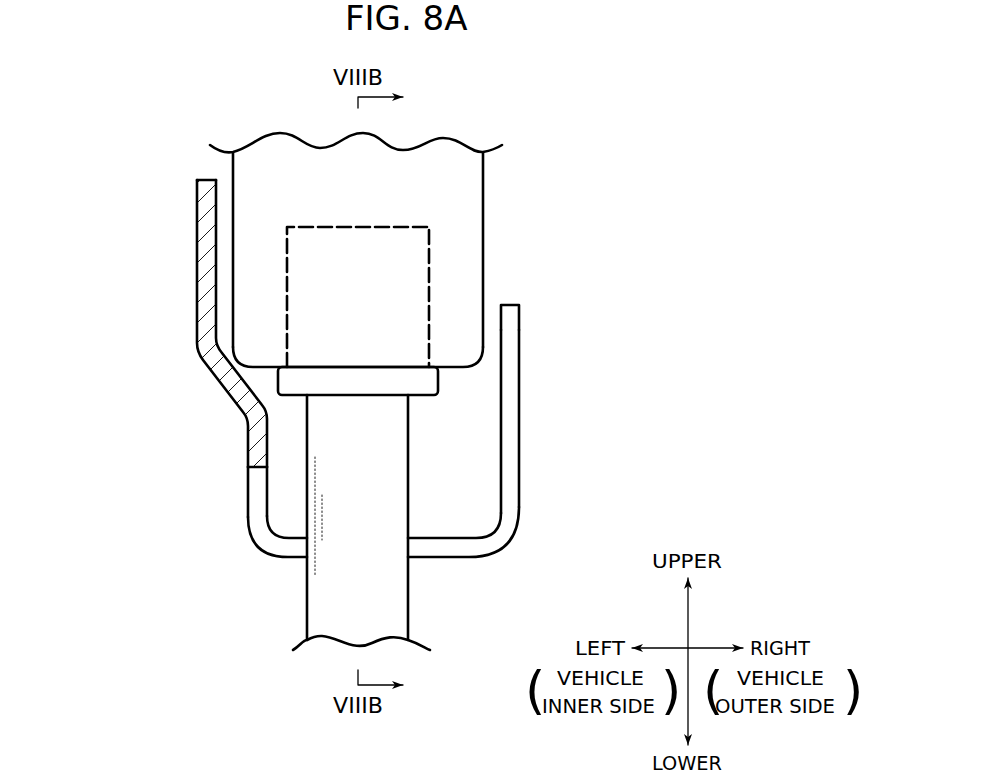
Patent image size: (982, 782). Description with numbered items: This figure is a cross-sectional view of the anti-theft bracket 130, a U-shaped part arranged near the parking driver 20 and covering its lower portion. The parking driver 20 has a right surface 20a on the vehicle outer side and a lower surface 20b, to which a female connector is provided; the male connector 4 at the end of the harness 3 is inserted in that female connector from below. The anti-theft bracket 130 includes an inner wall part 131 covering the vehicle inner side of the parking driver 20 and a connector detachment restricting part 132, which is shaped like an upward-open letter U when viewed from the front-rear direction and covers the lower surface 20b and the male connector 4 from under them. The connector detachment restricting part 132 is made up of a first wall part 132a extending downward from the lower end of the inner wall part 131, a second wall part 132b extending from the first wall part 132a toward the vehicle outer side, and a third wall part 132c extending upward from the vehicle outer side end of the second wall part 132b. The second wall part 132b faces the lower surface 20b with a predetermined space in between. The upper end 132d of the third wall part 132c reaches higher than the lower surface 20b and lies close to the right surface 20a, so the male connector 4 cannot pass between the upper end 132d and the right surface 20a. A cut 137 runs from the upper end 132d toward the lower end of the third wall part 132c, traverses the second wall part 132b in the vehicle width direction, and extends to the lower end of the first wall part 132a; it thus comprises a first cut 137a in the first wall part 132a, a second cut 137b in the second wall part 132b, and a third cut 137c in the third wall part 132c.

The harness 3 is at (375, 510).
The male connector 4 is at (420, 383).
The parking driver 20 is at (500, 193).
The right surface 20a is at (483, 228).
The lower surface 20b is at (455, 370).
The anti-theft bracket 130 is at (168, 328).
The inner wall part 131 is at (200, 232).
The connector detachment restricting part 132 is at (238, 521).
The first wall part 132a is at (248, 448).
The second wall part 132b is at (428, 548).
The third wall part 132c is at (508, 430).
The upper end 132d is at (508, 322).
The cut 137 is at (412, 462).
The first cut 137a is at (255, 485).
The second cut 137b is at (458, 551).
The third cut 137c is at (509, 462).